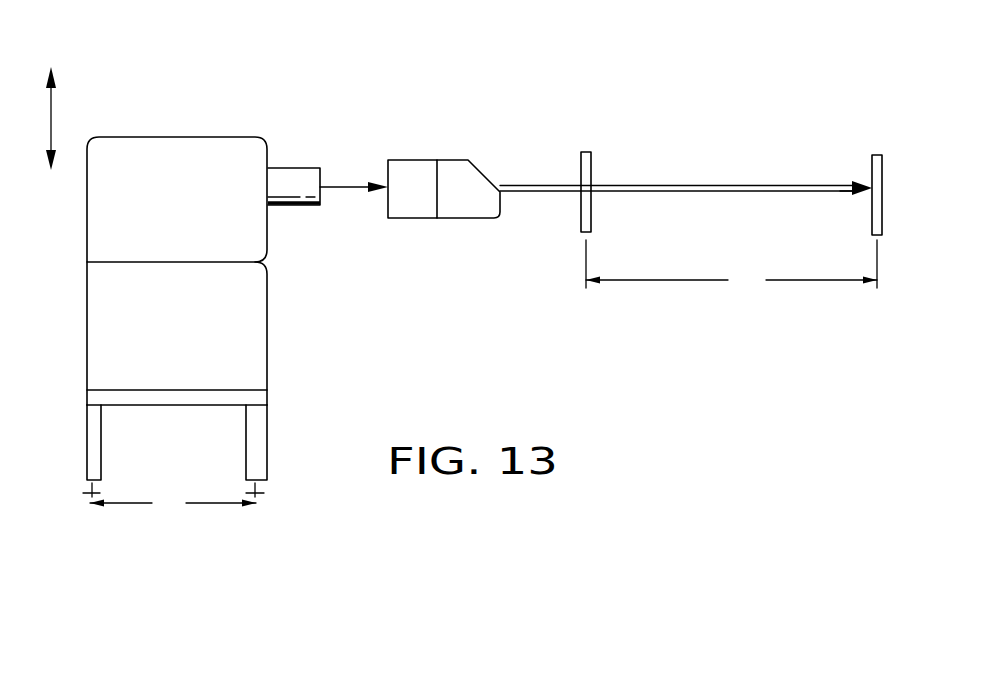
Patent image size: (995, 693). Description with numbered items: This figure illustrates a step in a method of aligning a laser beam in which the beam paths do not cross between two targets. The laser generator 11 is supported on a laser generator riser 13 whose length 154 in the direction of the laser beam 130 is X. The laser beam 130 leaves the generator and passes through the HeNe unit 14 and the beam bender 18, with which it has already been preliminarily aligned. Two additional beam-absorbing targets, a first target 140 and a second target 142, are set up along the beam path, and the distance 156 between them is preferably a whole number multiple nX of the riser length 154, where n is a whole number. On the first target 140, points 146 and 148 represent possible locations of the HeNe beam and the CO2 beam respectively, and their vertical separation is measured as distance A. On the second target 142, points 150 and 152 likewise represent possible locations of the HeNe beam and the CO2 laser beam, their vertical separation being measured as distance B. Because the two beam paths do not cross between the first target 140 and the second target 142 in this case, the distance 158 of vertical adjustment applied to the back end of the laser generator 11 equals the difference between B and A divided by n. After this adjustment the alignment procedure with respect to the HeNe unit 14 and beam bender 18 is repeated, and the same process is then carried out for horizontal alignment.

The laser generator 11 is at (205, 130).
The laser generator riser 13 is at (258, 455).
The HeNe unit 14 is at (415, 160).
The beam bender 18 is at (480, 165).
The laser beam 130 is at (352, 185).
The first target 140 is at (585, 152).
The second target 142 is at (875, 165).
The HeNe beam location on first target 146 is at (590, 188).
The CO2 beam location on first target 148 is at (591, 195).
The HeNe beam location on second target 150 is at (870, 182).
The CO2 beam location on second target 152 is at (870, 195).
The length of laser generator riser 154 is at (132, 505).
The distance between targets 156 is at (652, 282).
The distance of vertical adjustment 158 is at (51, 110).